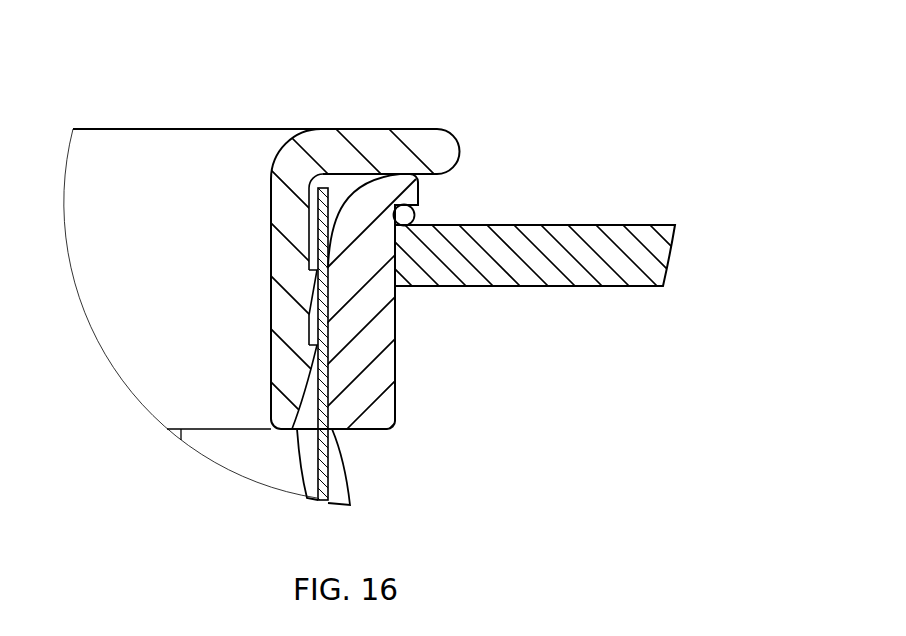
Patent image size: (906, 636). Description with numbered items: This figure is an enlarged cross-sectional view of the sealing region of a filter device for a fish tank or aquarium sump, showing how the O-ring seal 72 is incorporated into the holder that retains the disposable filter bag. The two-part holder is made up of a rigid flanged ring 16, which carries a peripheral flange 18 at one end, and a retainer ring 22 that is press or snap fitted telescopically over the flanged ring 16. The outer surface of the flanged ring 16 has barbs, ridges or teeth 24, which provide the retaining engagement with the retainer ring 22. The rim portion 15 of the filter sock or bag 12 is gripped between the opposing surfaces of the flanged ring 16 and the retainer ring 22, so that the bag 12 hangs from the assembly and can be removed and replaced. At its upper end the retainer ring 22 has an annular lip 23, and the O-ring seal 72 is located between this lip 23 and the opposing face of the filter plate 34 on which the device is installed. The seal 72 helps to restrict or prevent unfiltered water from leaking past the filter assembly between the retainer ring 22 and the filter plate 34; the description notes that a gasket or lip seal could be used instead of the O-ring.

The filter sock or bag 12 is at (338, 487).
The rim portion 15 is at (328, 302).
The flanged ring 16 is at (283, 255).
The peripheral flange 18 is at (378, 143).
The retainer ring 22 is at (353, 373).
The annular lip 23 is at (427, 190).
The barbs, ridges or teeth 24 is at (317, 353).
The filter plate 34 is at (600, 250).
The O-ring seal 72 is at (416, 215).